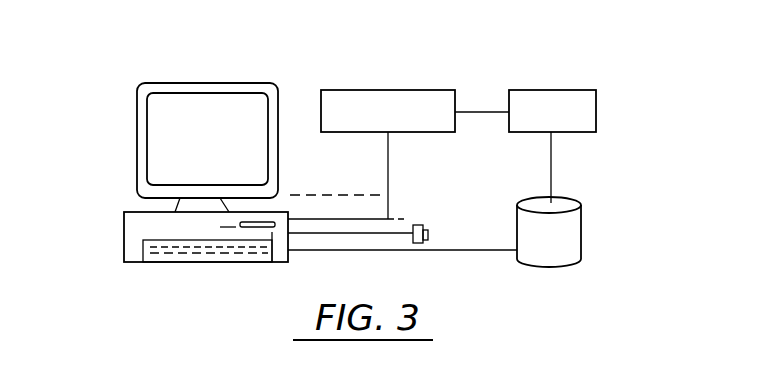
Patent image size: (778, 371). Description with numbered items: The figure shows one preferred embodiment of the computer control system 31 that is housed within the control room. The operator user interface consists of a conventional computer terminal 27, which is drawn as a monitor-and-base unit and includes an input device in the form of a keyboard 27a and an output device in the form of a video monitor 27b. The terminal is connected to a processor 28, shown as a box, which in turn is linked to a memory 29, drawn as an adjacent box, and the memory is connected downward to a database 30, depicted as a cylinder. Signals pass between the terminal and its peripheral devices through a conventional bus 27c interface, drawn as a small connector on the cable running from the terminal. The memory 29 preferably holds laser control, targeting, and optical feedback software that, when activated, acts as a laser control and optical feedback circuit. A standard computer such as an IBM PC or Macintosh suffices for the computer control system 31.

The computer control system 31 is at (108, 72).
The computer terminal 27 is at (263, 52).
The keyboard 27a is at (143, 247).
The video monitor 27b is at (268, 168).
The bus interface 27c is at (420, 226).
The processor 28 is at (430, 60).
The memory 29 is at (600, 66).
The database 30 is at (580, 213).